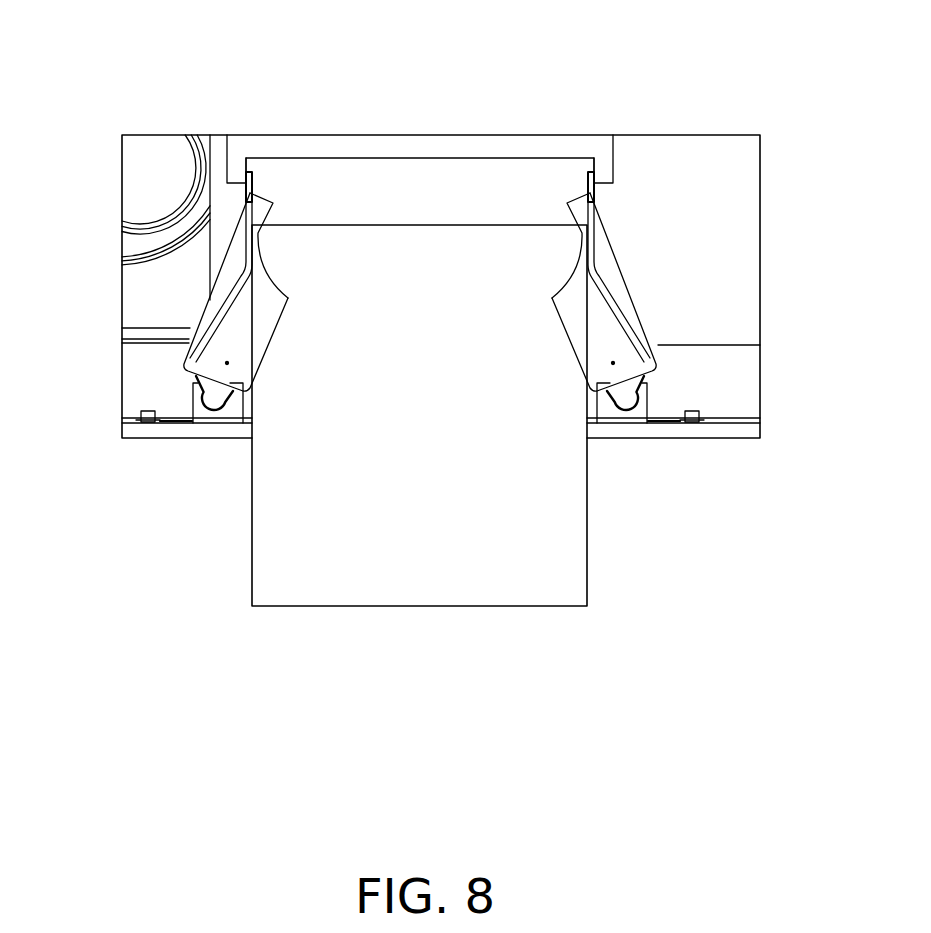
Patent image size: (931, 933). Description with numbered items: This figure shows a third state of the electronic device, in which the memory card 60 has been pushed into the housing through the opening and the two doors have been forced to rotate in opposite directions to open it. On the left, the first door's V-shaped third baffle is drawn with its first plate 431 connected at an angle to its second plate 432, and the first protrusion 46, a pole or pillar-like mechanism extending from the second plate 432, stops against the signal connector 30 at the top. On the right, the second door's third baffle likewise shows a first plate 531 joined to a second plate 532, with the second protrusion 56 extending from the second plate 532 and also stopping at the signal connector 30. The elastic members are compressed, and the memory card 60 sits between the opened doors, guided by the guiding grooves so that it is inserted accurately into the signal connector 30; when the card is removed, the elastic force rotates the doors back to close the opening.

The signal connector 30 is at (355, 147).
The first protrusion 46 is at (253, 195).
The second protrusion 56 is at (590, 175).
The memory card 60 is at (573, 528).
The first plate 431 is at (215, 306).
The second plate 432 is at (255, 250).
The first plate 531 is at (630, 297).
The second plate 532 is at (588, 233).